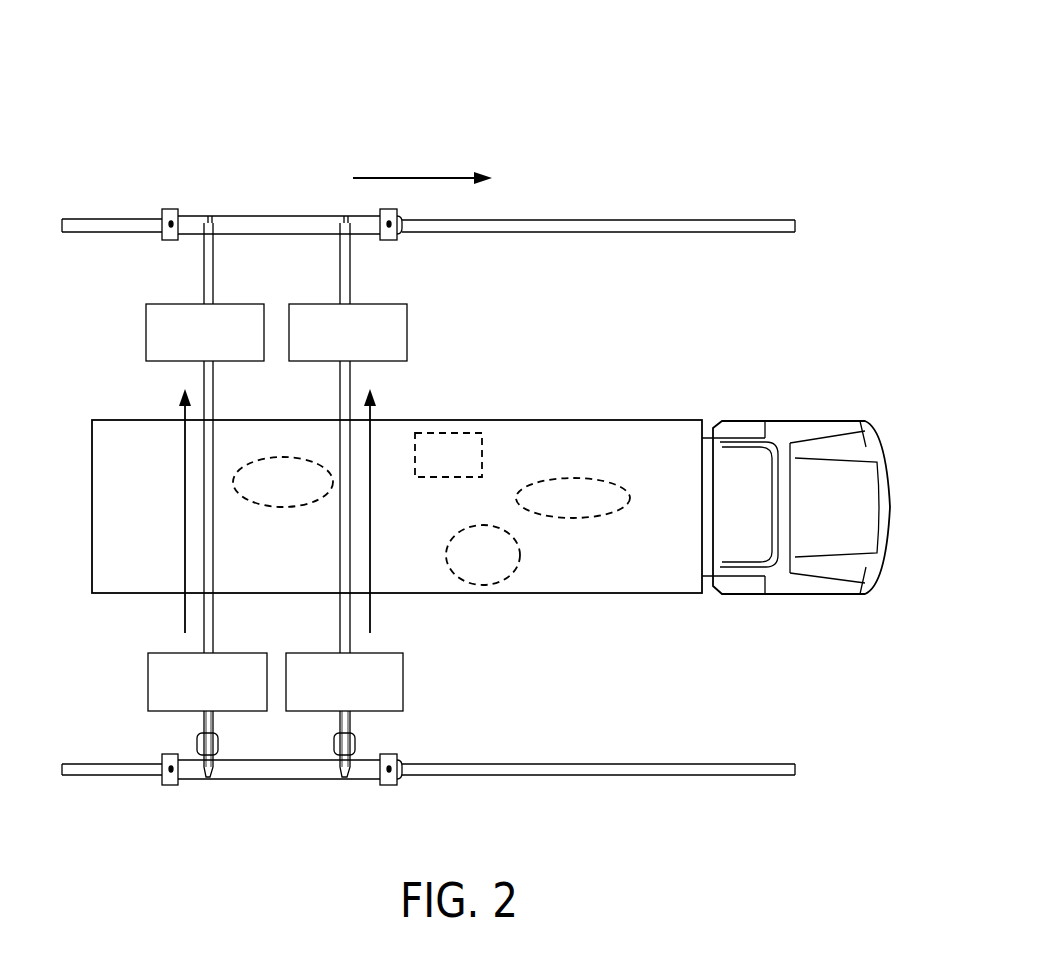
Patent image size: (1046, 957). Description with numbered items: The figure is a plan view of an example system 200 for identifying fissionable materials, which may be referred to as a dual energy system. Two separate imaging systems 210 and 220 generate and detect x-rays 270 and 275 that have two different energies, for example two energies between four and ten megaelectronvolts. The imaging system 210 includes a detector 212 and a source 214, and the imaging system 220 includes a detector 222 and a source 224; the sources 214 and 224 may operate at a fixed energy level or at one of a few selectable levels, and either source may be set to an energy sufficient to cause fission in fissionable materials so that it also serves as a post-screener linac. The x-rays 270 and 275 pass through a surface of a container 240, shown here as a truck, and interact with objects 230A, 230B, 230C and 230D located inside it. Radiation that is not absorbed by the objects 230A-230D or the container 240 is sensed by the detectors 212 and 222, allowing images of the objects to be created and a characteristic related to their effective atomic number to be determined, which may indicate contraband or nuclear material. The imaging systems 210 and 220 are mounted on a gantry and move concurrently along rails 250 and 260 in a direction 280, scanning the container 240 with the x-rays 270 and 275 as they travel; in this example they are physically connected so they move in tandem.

The system 200 is at (307, 76).
The imaging system 210 is at (172, 272).
The detector 212 is at (224, 347).
The source 214 is at (226, 696).
The imaging system 220 is at (388, 276).
The detector 222 is at (366, 347).
The source 224 is at (363, 696).
The object 230A is at (307, 497).
The object 230B is at (471, 471).
The object 230C is at (507, 571).
The object 230D is at (598, 512).
The container 240 is at (582, 419).
The rail 250 is at (683, 218).
The rail 260 is at (683, 763).
The x-rays 270 is at (183, 612).
The x-rays 275 is at (373, 612).
The direction 280 is at (414, 176).